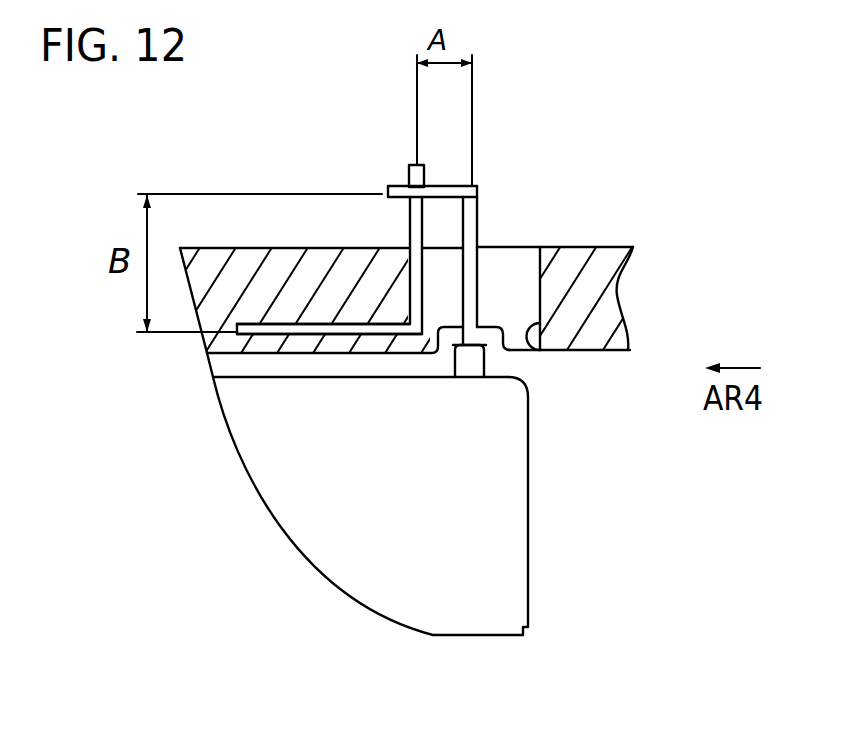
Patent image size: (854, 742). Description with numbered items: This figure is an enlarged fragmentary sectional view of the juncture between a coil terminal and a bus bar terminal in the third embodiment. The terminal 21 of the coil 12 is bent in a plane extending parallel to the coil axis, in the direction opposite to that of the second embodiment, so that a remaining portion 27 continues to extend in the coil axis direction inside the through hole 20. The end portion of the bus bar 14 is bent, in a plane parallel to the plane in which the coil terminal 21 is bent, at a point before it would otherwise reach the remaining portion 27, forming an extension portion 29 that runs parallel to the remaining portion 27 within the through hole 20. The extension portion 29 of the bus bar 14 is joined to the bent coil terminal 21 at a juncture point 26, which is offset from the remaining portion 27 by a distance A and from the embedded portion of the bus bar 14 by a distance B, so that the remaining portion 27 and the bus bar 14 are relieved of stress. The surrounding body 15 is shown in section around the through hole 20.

The coil 12 is at (521, 541).
The bus bar 14 is at (268, 337).
The body / wall 15 is at (610, 293).
The through hole 20 is at (522, 344).
The terminal 21 is at (488, 198).
The juncture point 26 is at (402, 181).
The remaining portion 27 is at (478, 227).
The extension portion 29 is at (407, 227).